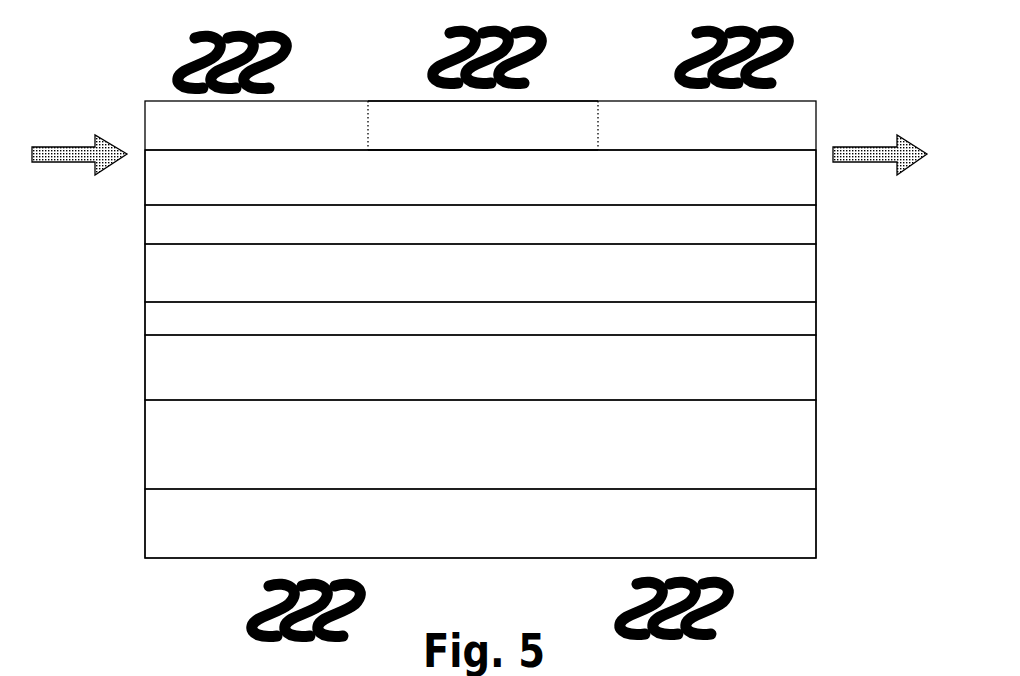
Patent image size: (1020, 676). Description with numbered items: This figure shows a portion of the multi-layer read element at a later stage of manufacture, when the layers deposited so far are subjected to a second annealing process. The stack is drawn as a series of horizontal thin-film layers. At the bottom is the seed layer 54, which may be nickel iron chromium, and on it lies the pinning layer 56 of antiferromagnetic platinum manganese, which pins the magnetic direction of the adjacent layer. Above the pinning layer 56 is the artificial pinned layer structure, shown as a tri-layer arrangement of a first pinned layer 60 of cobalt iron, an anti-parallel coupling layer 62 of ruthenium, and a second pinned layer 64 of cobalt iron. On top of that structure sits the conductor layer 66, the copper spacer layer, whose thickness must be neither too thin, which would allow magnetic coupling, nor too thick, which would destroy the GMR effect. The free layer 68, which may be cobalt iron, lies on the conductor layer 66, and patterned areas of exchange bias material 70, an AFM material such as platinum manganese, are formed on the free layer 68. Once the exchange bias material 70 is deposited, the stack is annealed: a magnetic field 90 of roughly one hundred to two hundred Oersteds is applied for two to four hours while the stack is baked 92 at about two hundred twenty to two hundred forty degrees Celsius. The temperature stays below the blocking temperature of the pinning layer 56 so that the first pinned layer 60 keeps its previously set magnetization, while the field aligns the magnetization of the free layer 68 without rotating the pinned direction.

The seed layer 54 is at (273, 537).
The pinning layer 56 is at (273, 454).
The first pinned layer 60 is at (273, 380).
The anti-parallel coupling layer 62 is at (273, 331).
The second pinned layer 64 is at (273, 284).
The conductor layer 66 is at (273, 236).
The free layer 68 is at (273, 190).
The exchange bias material 70 is at (502, 140).
The magnetic field 90 is at (871, 147).
The baking 92 is at (428, 63).